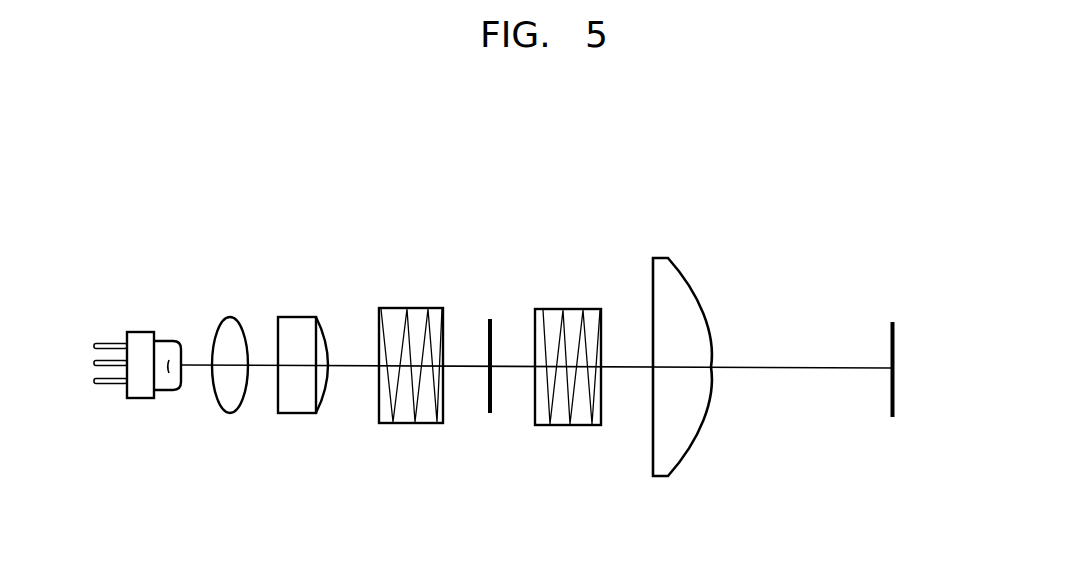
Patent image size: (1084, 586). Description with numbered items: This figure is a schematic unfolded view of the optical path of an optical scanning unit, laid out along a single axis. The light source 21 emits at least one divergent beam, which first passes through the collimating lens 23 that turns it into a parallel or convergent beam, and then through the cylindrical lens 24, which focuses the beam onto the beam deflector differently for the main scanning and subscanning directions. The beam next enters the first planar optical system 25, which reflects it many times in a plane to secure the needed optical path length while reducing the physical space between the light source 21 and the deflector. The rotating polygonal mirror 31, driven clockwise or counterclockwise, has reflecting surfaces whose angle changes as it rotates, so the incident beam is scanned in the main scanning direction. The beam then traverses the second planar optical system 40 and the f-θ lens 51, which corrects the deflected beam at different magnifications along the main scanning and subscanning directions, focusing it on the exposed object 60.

The light source 21 is at (141, 332).
The collimating lens 23 is at (231, 317).
The cylindrical lens 24 is at (298, 317).
The first planar optical system 25 is at (413, 308).
The rotating polygonal mirror 31 is at (490, 319).
The second planar optical system 40 is at (569, 309).
The f-θ lens 51 is at (663, 258).
The exposed object 60 is at (892, 322).